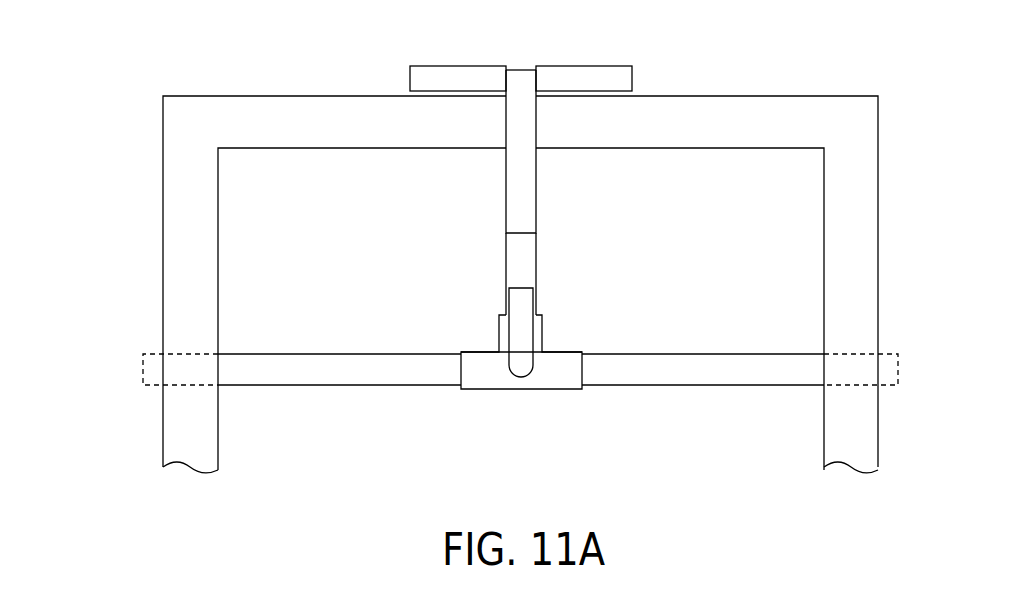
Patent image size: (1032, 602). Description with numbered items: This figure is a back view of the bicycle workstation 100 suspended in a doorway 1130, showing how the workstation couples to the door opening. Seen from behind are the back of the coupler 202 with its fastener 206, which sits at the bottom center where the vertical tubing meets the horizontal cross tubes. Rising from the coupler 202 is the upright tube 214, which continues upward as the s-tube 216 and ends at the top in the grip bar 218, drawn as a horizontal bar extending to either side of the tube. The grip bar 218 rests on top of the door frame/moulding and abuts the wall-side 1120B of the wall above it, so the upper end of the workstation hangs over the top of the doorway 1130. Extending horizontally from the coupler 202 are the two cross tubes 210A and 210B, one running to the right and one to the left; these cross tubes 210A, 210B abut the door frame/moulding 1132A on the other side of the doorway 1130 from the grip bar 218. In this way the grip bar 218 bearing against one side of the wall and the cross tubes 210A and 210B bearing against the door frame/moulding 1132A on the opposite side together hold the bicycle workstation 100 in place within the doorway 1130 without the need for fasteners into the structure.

The bicycle workstation 100 is at (672, 300).
The coupler 202 is at (498, 340).
The fastener 206 is at (520, 368).
The cross tube 210A is at (735, 370).
The cross tube 210B is at (306, 370).
The upright tube 214 is at (521, 260).
The s-tube 216 is at (520, 214).
The grip bar 218 is at (593, 74).
The wall-side 1120B is at (393, 40).
The doorway 1130 is at (383, 263).
The door frame/moulding 1132A is at (846, 125).